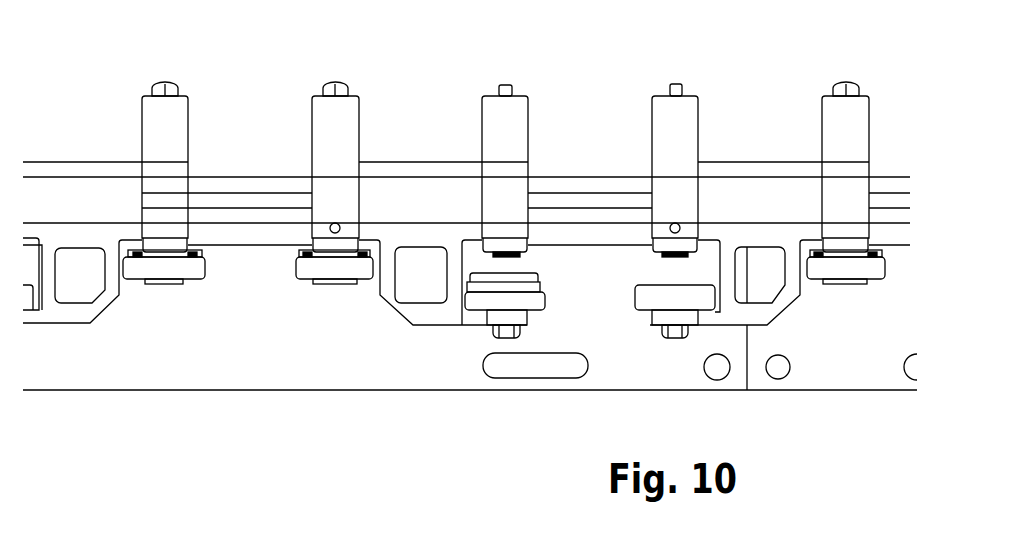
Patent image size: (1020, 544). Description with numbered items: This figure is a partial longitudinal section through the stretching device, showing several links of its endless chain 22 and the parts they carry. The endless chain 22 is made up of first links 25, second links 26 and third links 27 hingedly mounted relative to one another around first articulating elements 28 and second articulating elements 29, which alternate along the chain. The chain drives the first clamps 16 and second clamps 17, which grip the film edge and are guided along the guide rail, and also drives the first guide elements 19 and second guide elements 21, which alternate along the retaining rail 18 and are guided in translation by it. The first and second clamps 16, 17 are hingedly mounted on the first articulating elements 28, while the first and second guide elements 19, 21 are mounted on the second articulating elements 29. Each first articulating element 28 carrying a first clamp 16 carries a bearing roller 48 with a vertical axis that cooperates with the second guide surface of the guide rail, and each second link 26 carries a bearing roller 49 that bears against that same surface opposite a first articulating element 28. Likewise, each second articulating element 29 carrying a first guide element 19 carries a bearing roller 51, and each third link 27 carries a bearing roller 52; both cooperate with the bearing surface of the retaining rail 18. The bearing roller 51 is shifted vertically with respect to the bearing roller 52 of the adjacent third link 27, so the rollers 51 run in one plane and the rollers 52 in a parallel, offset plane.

The first clamp 16 is at (338, 155).
The second clamp 17 is at (682, 117).
The retaining rail 18 is at (248, 353).
The first guide element 19 is at (170, 140).
The second guide element 21 is at (507, 128).
The endless chain 22 is at (452, 153).
The first link 25 is at (232, 187).
The second link 26 is at (72, 317).
The third link 27 is at (438, 313).
The first articulating element 28 is at (347, 87).
The second articulating element 29 is at (157, 85).
The bearing roller 48 is at (332, 268).
The bearing roller 49 is at (647, 302).
The bearing roller 51 is at (167, 268).
The bearing roller 52 is at (490, 298).